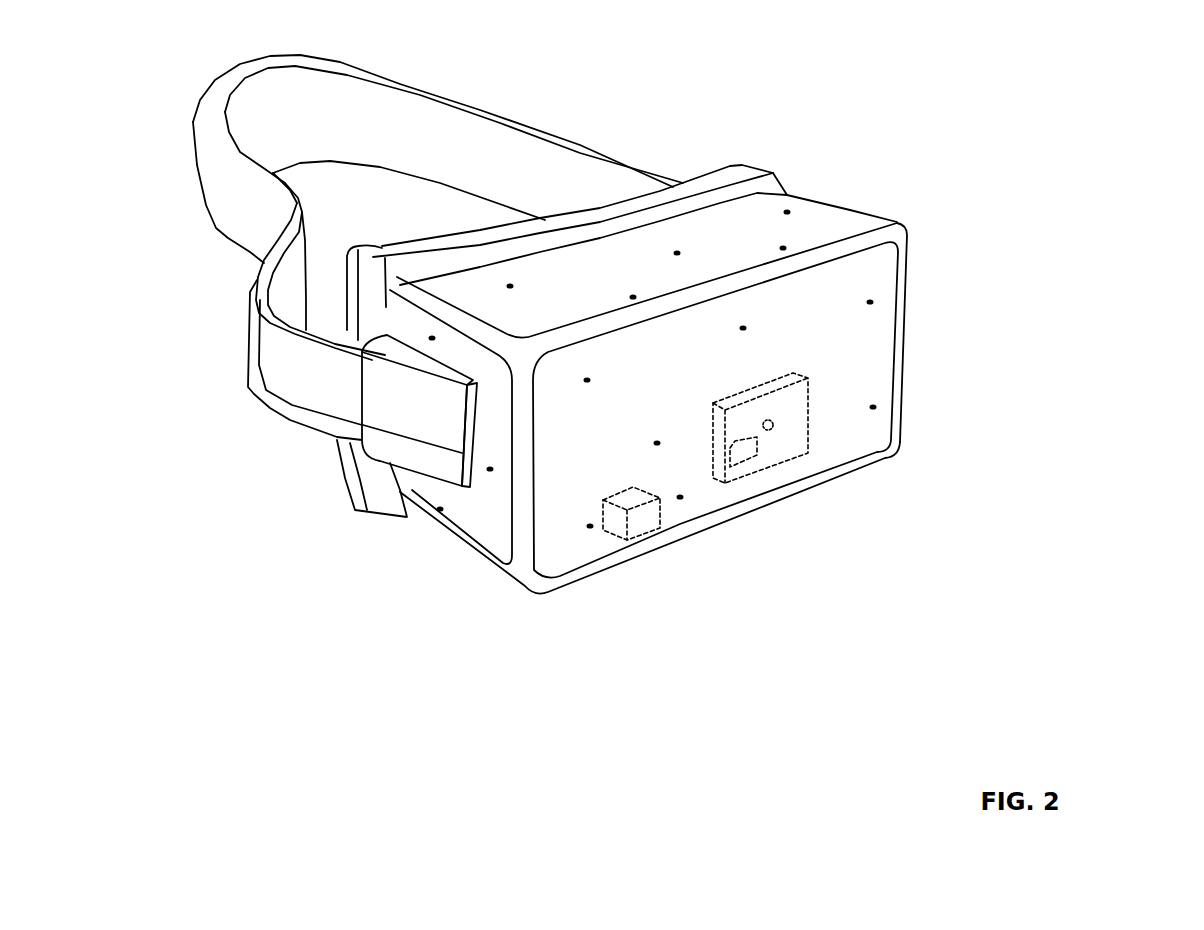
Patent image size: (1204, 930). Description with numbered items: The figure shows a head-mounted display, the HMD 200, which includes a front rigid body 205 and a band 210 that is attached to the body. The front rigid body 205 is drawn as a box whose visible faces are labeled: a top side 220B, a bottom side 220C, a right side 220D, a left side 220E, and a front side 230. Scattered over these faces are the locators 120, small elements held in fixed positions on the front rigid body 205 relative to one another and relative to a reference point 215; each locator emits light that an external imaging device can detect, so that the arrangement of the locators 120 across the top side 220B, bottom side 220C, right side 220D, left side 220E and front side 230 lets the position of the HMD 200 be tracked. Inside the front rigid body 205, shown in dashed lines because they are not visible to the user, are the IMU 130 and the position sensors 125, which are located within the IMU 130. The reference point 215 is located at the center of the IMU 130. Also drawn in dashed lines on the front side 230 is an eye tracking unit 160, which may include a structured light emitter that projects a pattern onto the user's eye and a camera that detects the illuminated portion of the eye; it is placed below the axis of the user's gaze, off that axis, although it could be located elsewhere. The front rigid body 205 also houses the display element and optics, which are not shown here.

The HMD 200 is at (186, 465).
The front rigid body 205 is at (640, 425).
The band 210 is at (552, 128).
The top side 220B is at (478, 286).
The bottom side 220C is at (437, 558).
The right side 220D is at (484, 511).
The left side 220E is at (875, 213).
The front side 230 is at (574, 552).
The locators 120 is at (882, 400).
The position sensors 125 is at (743, 459).
The IMU 130 is at (944, 535).
The reference point 215 is at (770, 427).
The eye tracking unit 160 is at (636, 529).